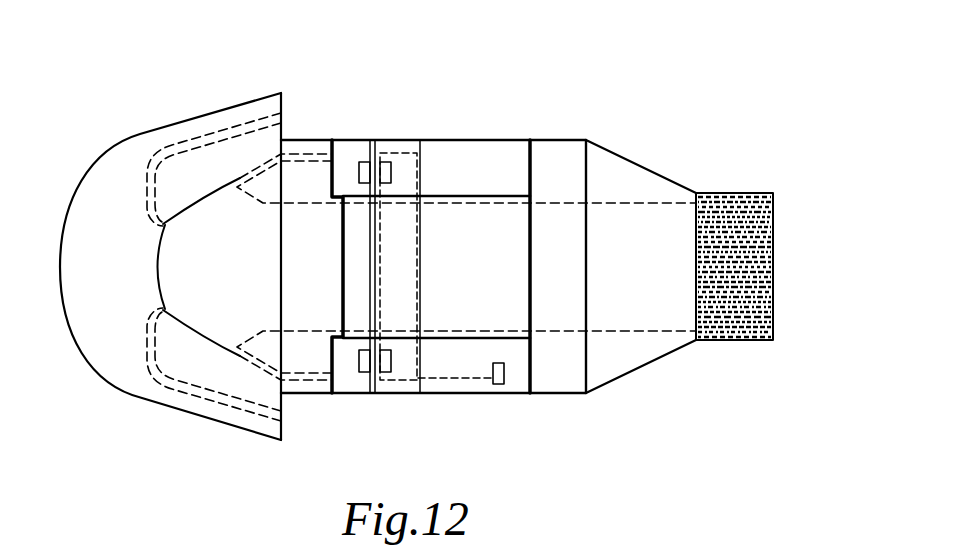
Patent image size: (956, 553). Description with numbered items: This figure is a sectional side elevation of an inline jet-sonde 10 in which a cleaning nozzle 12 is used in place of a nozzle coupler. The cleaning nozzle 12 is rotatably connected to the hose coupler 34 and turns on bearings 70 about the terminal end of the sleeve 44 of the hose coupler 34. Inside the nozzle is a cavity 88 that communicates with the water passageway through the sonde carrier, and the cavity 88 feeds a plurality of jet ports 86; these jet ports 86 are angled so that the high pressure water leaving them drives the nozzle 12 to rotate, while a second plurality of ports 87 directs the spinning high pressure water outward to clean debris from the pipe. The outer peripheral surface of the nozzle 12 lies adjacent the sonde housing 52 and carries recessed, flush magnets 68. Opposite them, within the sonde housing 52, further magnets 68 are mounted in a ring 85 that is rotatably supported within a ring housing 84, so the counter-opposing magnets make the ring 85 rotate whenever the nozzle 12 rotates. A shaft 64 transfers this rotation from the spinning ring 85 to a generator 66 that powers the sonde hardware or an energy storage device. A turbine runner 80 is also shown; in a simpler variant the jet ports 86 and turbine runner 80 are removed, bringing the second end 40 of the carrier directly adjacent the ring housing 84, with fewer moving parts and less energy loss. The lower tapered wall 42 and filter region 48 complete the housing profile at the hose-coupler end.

The inline jet-sonde 10 is at (243, 63).
The cleaning nozzle 12 is at (141, 397).
The hose coupler 34 is at (645, 160).
The second end of the carrier 40 is at (308, 353).
The lower tapered wall 42 is at (633, 360).
The sleeve 44 is at (508, 337).
The filter 48 is at (753, 200).
The sonde housing 52 is at (480, 136).
The shaft 64 is at (443, 378).
The generator 66 is at (498, 385).
The magnets 68 is at (365, 165).
The bearings 70 is at (337, 197).
The turbine runner 80 is at (371, 136).
The ring housing 84 is at (407, 182).
The ring 85 is at (407, 362).
The jet ports 86 is at (243, 180).
The ports 87 is at (233, 402).
The cavity 88 is at (175, 252).